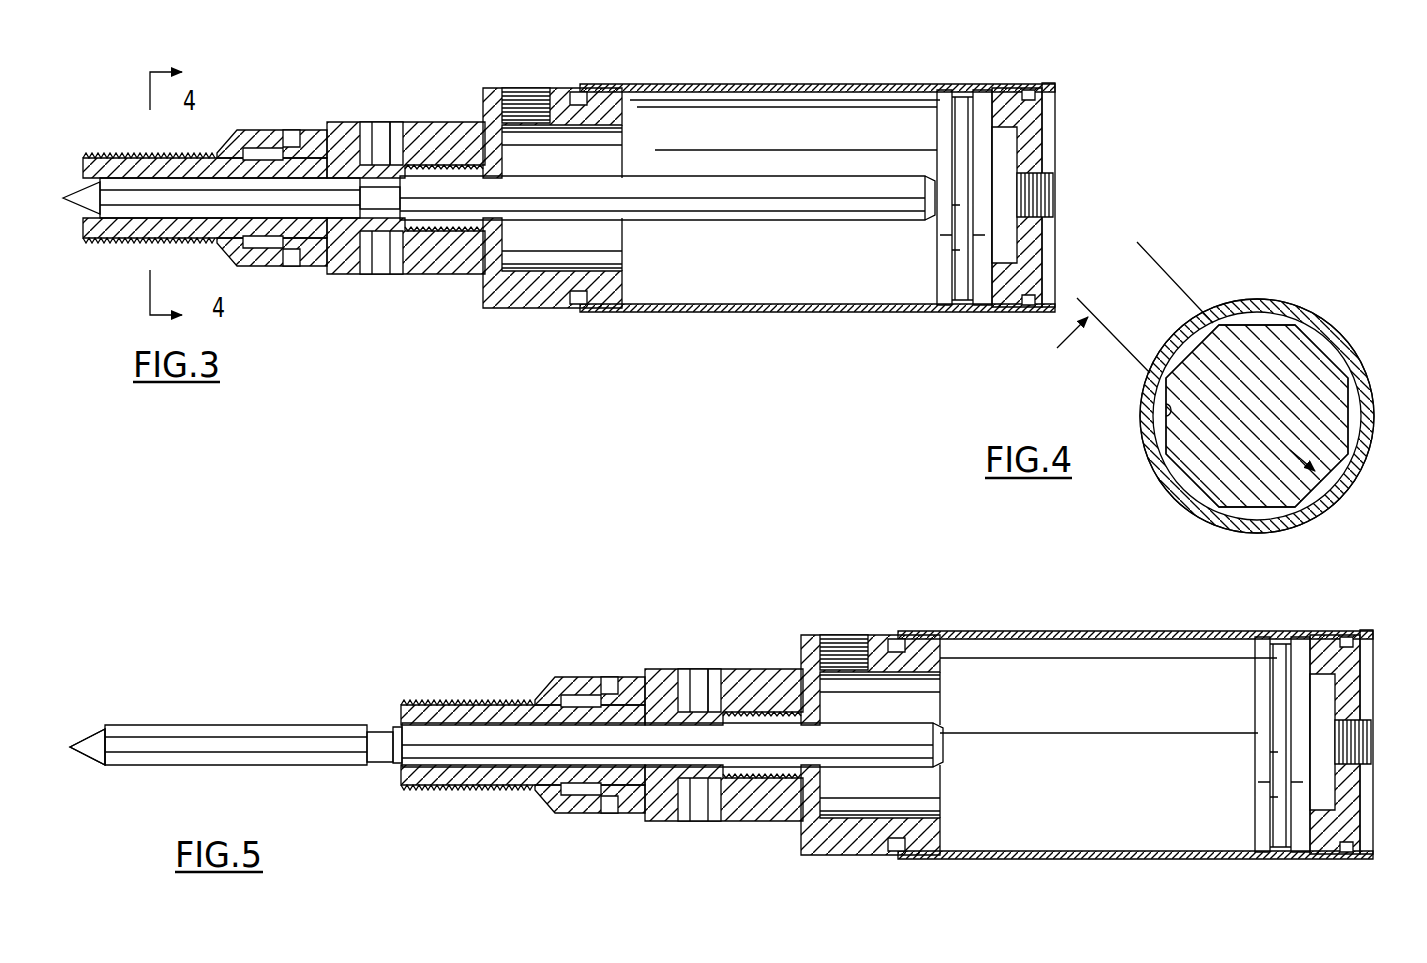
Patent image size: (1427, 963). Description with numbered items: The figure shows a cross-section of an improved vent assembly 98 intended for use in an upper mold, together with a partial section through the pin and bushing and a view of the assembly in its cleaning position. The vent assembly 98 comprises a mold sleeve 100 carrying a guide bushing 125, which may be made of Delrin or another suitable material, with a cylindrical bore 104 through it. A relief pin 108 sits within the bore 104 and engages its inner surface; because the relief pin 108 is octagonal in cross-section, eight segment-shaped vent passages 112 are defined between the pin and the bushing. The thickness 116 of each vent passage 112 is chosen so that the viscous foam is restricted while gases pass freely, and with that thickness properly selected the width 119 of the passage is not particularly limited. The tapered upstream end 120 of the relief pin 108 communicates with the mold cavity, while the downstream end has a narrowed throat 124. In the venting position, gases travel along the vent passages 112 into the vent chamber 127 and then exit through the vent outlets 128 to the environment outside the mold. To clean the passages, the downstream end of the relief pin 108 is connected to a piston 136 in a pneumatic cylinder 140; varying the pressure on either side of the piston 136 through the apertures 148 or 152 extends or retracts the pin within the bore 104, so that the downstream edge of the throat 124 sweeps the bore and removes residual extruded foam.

In FIG. 3, the vent assembly 98 is at (769, 70).
In FIG. 5, the vent assembly 98 is at (1087, 706).
In FIG. 4, the mold sleeve 100 is at (1240, 298).
In FIG. 5, the mold sleeve 100 is at (523, 716).
In FIG. 4, the cylindrical bore 104 is at (1160, 410).
In FIG. 4, the relief pin 108 is at (1298, 365).
In FIG. 5, the relief pin 108 is at (506, 721).
In FIG. 4, the vent passages 112 is at (1272, 303).
In FIG. 4, the thickness 116 is at (1332, 490).
In FIG. 4, the width 119 is at (1159, 243).
In FIG. 5, the upstream end 120 is at (92, 720).
In FIG. 3, the narrowed throat 124 is at (388, 216).
In FIG. 5, the narrowed throat 124 is at (363, 719).
In FIG. 3, the guide bushing 125 is at (345, 122).
In FIG. 4, the guide bushing 125 is at (1365, 428).
In FIG. 5, the guide bushing 125 is at (669, 729).
In FIG. 3, the vent chamber 127 is at (385, 153).
In FIG. 5, the vent chamber 127 is at (712, 658).
In FIG. 3, the vent outlets 128 is at (368, 143).
In FIG. 5, the vent outlets 128 is at (685, 741).
In FIG. 3, the piston 136 is at (937, 123).
In FIG. 5, the piston 136 is at (1155, 744).
In FIG. 3, the pneumatic cylinder 140 is at (797, 142).
In FIG. 5, the pneumatic cylinder 140 is at (1108, 717).
In FIG. 3, the aperture 148 is at (1062, 186).
In FIG. 5, the aperture 148 is at (1372, 752).
In FIG. 3, the aperture 152 is at (528, 80).
In FIG. 5, the aperture 152 is at (844, 623).